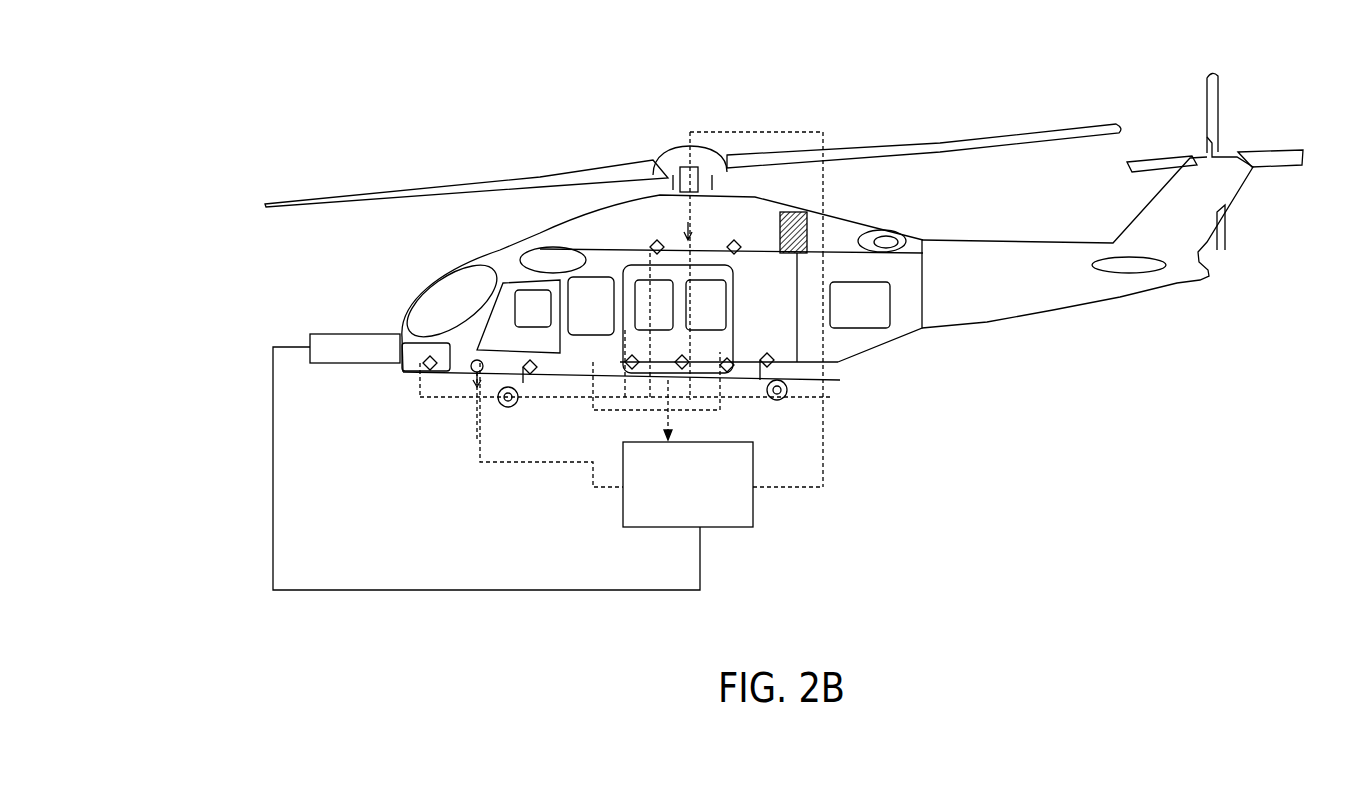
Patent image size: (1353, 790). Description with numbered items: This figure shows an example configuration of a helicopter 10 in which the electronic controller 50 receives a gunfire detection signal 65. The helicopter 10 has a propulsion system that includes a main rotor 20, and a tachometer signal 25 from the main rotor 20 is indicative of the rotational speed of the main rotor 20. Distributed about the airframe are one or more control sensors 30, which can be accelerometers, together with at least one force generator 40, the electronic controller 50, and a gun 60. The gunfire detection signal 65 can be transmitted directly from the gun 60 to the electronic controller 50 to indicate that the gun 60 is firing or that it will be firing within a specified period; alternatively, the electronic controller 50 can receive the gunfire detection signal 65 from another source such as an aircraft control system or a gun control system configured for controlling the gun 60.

The helicopter 10 is at (878, 104).
The main rotor 20 is at (668, 146).
The tachometer signal 25 is at (743, 131).
The control sensors 30 is at (650, 247).
The force generator 40 is at (683, 226).
The electronic controller 50 is at (693, 497).
The gun 60 is at (350, 333).
The gunfire detection signal 65 is at (390, 588).